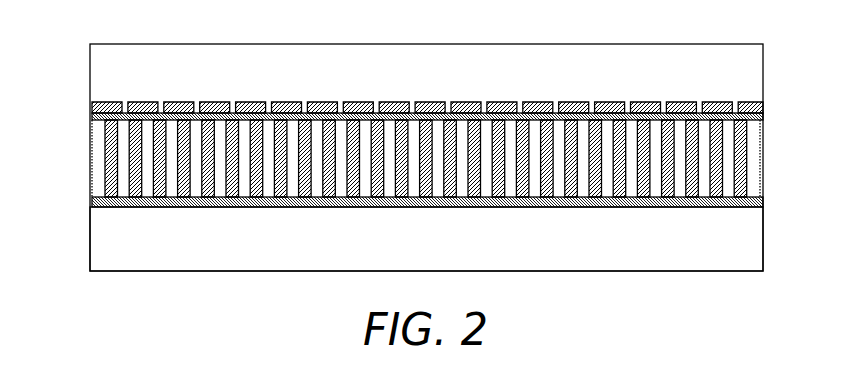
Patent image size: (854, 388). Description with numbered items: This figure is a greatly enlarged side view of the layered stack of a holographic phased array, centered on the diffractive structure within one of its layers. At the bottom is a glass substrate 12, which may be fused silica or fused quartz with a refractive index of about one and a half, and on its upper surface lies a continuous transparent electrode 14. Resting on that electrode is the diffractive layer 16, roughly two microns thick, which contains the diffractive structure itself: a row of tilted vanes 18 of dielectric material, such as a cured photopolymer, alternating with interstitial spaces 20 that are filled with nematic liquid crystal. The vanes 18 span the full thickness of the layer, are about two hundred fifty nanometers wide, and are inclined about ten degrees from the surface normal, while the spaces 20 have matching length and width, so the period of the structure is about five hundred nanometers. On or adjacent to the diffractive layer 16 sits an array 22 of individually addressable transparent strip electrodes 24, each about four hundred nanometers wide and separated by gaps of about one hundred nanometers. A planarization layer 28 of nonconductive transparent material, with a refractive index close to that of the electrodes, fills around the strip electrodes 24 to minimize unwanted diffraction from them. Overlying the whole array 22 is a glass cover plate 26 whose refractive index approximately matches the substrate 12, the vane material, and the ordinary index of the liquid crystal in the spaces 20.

The glass substrate 12 is at (755, 238).
The continuous transparent electrode 14 is at (92, 203).
The diffractive layer 16 is at (427, 164).
The tilted vanes 18 is at (743, 147).
The interstitial spaces 20 is at (753, 165).
The array of strip electrodes 22 is at (406, 104).
The transparent strip electrodes 24 is at (720, 101).
The glass cover plate 26 is at (128, 50).
The planarization layer 28 is at (92, 118).